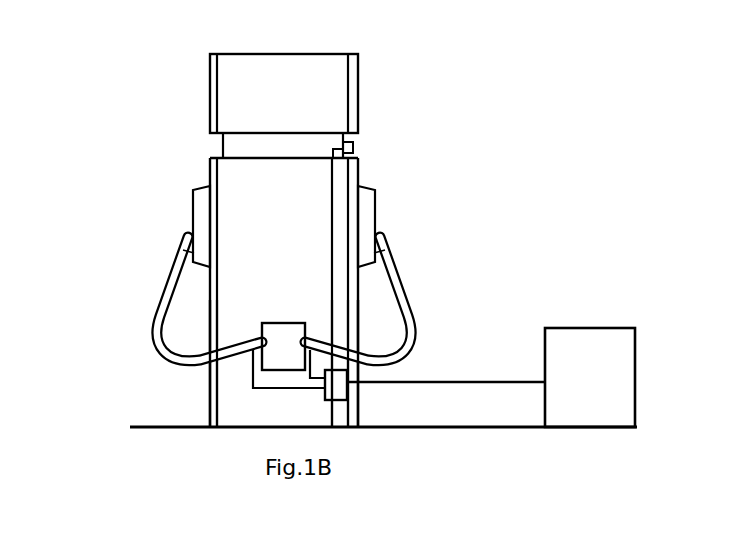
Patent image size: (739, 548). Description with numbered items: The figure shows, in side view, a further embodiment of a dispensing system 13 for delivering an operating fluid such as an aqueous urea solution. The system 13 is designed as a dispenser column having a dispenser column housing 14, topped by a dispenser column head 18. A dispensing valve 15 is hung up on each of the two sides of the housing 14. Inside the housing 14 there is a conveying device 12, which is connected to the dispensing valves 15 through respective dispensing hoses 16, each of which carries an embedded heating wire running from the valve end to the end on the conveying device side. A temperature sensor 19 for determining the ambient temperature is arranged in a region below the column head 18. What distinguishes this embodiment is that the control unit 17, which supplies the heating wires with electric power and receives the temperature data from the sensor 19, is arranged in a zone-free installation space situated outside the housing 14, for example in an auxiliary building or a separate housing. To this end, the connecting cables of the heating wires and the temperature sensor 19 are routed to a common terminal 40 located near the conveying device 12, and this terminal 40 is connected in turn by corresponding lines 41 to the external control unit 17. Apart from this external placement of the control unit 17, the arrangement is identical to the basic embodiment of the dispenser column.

The conveying device 12 is at (247, 411).
The dispensing system 13 is at (272, 253).
The dispenser column housing 14 is at (300, 219).
The dispensing valve 15 is at (274, 203).
The dispensing hose 16 is at (277, 298).
The control unit 17 is at (612, 326).
The dispenser column head 18 is at (203, 69).
The temperature sensor 19 is at (415, 116).
The common terminal 40 is at (411, 436).
The lines 41 is at (491, 442).